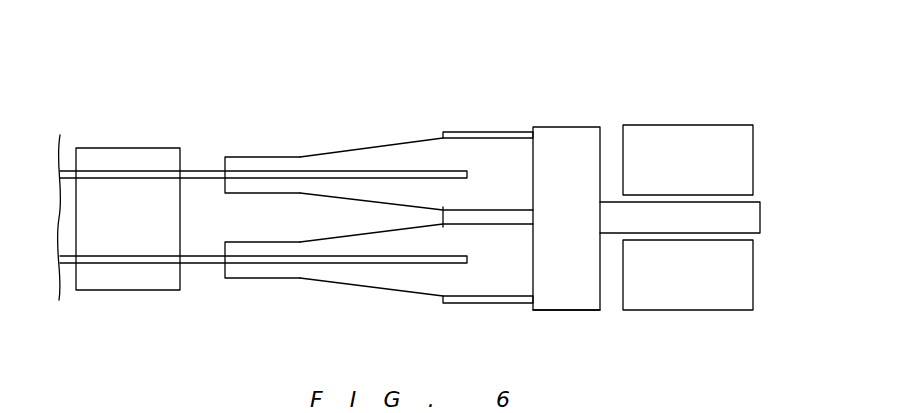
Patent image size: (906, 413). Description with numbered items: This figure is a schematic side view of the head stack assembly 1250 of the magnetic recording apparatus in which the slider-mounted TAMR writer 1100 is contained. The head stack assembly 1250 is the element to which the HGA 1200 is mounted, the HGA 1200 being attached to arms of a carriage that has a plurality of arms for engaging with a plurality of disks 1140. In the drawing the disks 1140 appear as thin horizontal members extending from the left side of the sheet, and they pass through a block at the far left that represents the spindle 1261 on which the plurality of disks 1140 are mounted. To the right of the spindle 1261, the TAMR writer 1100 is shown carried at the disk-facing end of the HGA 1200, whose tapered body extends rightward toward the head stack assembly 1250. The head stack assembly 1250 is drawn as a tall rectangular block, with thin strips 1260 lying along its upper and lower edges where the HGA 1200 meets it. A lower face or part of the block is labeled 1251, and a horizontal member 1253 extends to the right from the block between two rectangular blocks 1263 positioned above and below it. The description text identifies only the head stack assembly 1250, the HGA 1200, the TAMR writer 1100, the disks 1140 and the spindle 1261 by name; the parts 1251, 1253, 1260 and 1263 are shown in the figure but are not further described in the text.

The TAMR writer 1100 is at (218, 156).
The disks 1140 is at (203, 171).
The HGA 1200 is at (317, 160).
The head stack assembly 1250 is at (572, 100).
The bottom surface of connector block 1251 is at (567, 297).
The shaft 1253 is at (748, 215).
The cover strip 1260 is at (453, 132).
The spindle 1261 is at (116, 162).
The support block 1263 is at (688, 138).